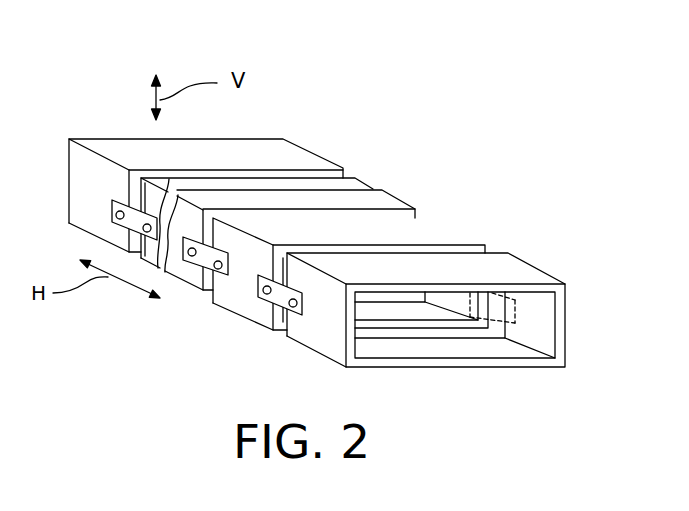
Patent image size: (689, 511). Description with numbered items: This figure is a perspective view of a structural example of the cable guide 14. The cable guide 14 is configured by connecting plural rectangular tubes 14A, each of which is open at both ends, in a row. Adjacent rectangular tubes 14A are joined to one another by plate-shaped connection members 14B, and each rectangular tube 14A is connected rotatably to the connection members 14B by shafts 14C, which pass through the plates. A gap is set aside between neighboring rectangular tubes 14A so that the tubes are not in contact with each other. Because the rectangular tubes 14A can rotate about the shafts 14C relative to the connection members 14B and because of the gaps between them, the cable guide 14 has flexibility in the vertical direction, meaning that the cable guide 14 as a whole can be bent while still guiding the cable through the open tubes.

The cable guide 14 is at (317, 228).
The rectangular tube 14A is at (463, 229).
The connection member 14B is at (278, 315).
The shaft 14C is at (280, 306).